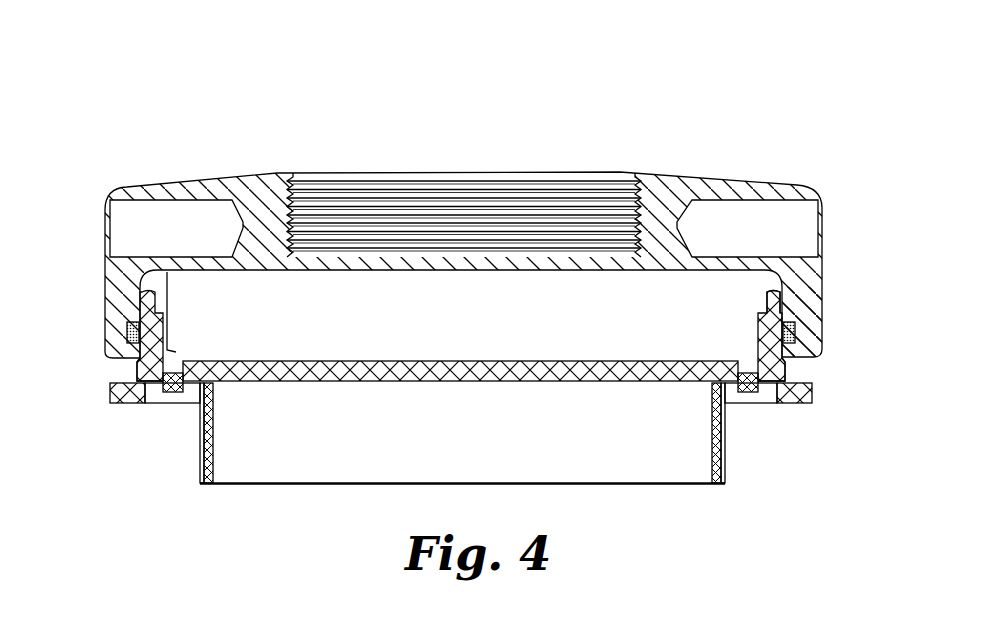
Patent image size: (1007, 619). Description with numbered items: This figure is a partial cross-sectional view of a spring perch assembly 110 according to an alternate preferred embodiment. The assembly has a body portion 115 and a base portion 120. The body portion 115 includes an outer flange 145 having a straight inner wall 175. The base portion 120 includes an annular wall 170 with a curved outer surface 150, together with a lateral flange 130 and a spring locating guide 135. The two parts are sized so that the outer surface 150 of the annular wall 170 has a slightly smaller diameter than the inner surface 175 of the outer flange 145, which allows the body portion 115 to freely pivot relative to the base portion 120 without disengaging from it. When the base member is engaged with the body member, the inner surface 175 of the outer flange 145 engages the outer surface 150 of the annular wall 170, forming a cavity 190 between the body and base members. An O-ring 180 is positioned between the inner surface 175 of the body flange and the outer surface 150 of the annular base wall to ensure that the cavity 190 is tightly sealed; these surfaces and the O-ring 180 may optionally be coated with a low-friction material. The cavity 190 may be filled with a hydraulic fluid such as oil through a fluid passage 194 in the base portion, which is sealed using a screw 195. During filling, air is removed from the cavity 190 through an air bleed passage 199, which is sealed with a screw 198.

The assembly 110 is at (636, 98).
The body portion 115 is at (746, 181).
The base portion 120 is at (300, 486).
The lateral flange 130 is at (796, 405).
The spring locating guide 135 is at (726, 486).
The outer flange 145 is at (822, 290).
The outer surface 150 is at (808, 367).
The annular wall 170 is at (766, 301).
The inner wall 175 is at (800, 352).
The O-ring 180 is at (127, 333).
The cavity 190 is at (398, 300).
The fluid passage 194 is at (786, 381).
The screw 195 is at (746, 393).
The screw 198 is at (175, 392).
The air bleed passage 199 is at (137, 363).